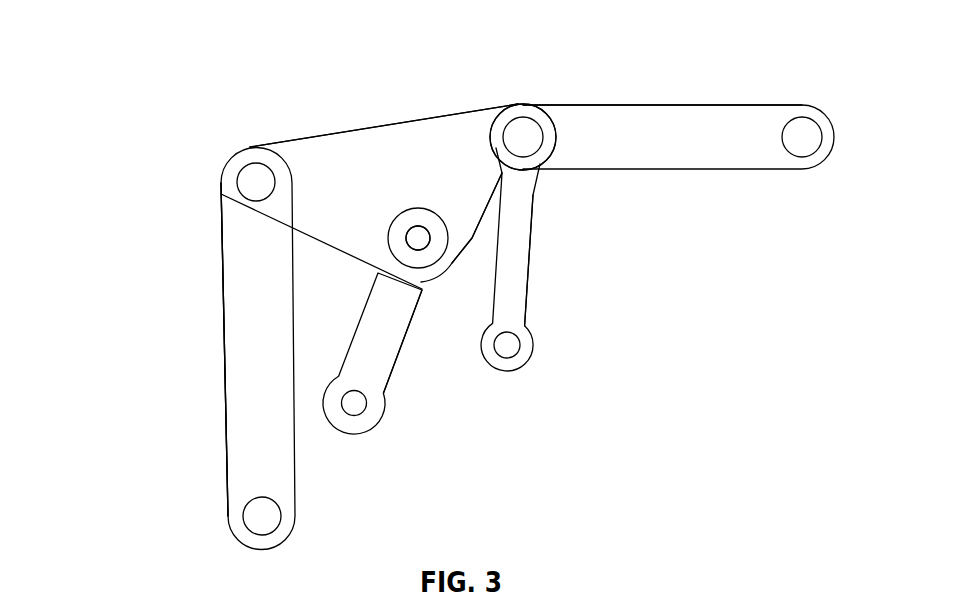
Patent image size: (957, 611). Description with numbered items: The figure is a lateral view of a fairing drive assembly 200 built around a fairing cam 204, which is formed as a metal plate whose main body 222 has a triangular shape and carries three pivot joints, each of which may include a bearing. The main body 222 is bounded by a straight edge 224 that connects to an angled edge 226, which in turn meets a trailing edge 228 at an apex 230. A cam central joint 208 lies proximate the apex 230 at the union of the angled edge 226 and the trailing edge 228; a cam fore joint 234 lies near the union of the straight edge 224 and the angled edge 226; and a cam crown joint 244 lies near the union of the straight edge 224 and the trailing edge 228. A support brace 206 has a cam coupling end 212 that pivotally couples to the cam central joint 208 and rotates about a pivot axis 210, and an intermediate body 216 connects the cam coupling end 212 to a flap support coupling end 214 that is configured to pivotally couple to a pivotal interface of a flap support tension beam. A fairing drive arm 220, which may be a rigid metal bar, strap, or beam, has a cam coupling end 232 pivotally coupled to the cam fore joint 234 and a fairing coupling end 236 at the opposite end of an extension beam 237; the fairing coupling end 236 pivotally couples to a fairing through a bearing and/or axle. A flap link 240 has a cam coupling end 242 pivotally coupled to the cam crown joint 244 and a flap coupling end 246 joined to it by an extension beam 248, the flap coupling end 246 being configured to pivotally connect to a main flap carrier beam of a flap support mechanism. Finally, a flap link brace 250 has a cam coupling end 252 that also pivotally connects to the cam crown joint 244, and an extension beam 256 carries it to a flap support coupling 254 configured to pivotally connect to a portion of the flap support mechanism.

The fairing drive assembly 200 is at (122, 404).
The fairing cam 204 is at (369, 187).
The support brace 206 is at (399, 387).
The cam central joint 208 is at (418, 237).
The pivot axis 210 is at (418, 237).
The cam coupling end 212 is at (520, 227).
The flap support coupling end 214 is at (354, 434).
The intermediate body 216 is at (393, 348).
The fairing drive arm 220 is at (216, 332).
The main body 222 is at (415, 132).
The straight edge 224 is at (302, 136).
The angled edge 226 is at (318, 243).
The trailing edge 228 is at (455, 262).
The apex 230 is at (438, 279).
The cam coupling end 232 is at (222, 184).
The cam fore joint 234 is at (256, 182).
The fairing coupling end 236 is at (240, 537).
The extension beam 237 is at (222, 336).
The flap link 240 is at (707, 107).
The cam coupling end 242 is at (523, 137).
The cam crown joint 244 is at (521, 136).
The flap coupling end 246 is at (815, 114).
The extension beam 248 is at (686, 115).
The flap link brace 250 is at (548, 263).
The cam coupling end 252 is at (540, 124).
The flap support coupling 254 is at (522, 344).
The extension beam 256 is at (526, 282).